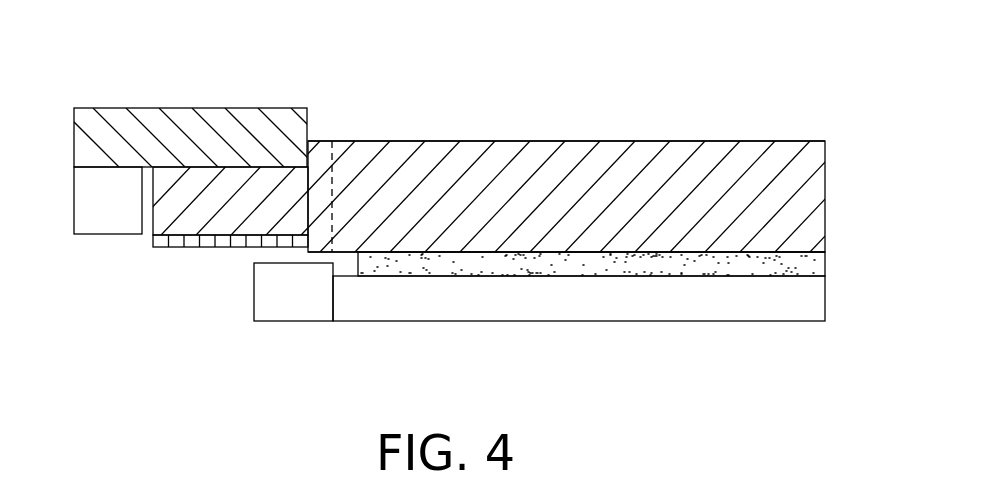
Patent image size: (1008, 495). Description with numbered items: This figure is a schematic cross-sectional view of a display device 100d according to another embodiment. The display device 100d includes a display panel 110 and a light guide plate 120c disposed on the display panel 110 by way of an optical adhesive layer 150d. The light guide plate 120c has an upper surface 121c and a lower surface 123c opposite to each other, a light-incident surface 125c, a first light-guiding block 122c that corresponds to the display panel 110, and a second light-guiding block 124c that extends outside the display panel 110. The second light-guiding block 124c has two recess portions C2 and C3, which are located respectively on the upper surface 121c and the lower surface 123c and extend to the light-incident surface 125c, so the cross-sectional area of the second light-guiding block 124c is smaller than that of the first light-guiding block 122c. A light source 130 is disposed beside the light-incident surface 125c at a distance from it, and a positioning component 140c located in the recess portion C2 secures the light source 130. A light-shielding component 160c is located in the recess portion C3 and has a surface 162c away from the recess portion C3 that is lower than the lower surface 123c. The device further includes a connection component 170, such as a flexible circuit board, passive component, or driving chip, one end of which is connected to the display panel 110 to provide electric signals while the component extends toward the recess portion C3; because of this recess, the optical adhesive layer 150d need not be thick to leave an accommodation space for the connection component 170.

The display device 100d is at (787, 352).
The display panel 110 is at (810, 298).
The light guide plate 120c is at (433, 72).
The upper surface 121c is at (781, 132).
The first light-guiding block 122c is at (420, 158).
The lower surface 123c is at (768, 253).
The second light-guiding block 124c is at (322, 141).
The light-incident surface 125c is at (143, 196).
The light source 130 is at (103, 215).
The positioning component 140c is at (112, 130).
The optical adhesive layer 150d is at (427, 262).
The light-shielding component 160c is at (183, 242).
The surface 162c is at (202, 247).
The connection component 170 is at (287, 305).
The recess portion C2 is at (288, 156).
The recess portion C3 is at (232, 247).